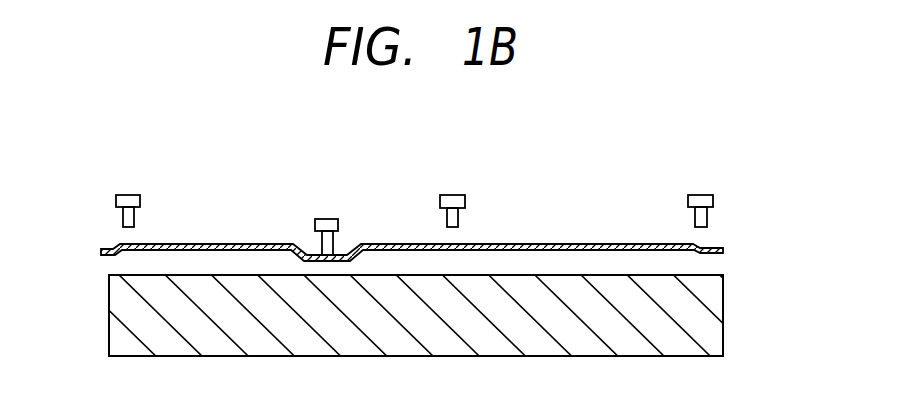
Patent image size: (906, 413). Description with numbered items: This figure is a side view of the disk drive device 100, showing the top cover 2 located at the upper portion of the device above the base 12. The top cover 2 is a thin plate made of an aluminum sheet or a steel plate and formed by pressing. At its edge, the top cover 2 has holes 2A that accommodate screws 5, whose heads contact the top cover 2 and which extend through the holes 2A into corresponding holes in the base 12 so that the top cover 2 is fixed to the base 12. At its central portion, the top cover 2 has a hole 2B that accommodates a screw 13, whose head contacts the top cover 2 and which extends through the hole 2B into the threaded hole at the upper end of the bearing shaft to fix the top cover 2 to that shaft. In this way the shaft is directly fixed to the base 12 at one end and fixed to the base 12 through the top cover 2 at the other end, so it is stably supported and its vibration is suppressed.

The disk drive device 100 is at (578, 203).
The top cover 2 is at (723, 251).
The holes 2A is at (118, 244).
The hole 2B is at (313, 250).
The screws 5 is at (140, 199).
The screw 13 is at (338, 225).
The base 12 is at (723, 310).